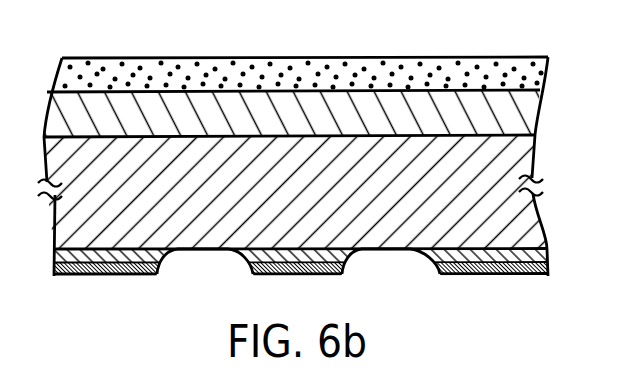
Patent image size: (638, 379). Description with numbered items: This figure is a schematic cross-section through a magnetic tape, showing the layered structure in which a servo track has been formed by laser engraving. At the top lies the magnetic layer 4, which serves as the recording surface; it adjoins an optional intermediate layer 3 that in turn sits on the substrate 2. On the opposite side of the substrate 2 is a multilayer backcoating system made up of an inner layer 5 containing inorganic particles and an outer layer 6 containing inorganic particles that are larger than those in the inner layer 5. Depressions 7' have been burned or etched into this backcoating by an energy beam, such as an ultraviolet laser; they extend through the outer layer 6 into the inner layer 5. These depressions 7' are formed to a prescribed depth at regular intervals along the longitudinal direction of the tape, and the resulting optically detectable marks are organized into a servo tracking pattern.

The substrate 2 is at (535, 225).
The intermediate layer 3 is at (525, 111).
The magnetic layer 4 is at (541, 70).
The inner layer 5 is at (550, 253).
The outer layer 6 is at (548, 273).
The depressions 7' is at (301, 281).